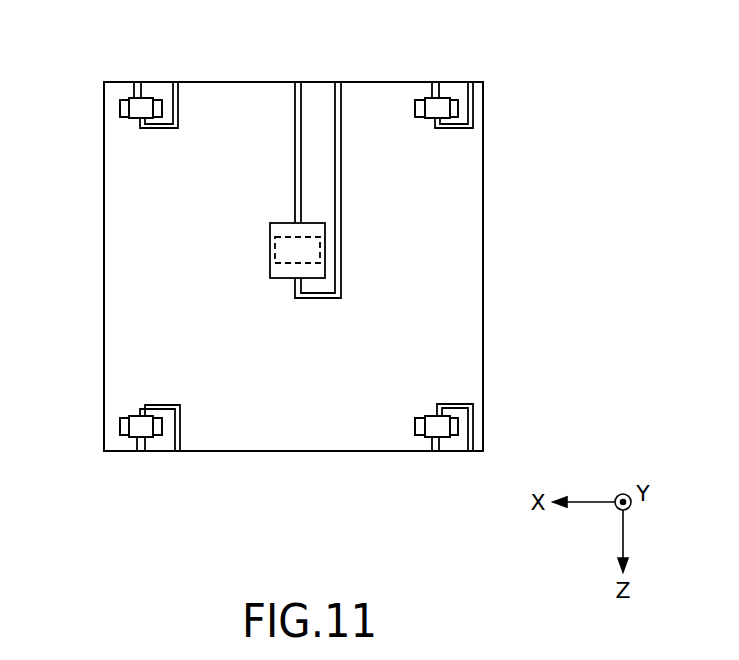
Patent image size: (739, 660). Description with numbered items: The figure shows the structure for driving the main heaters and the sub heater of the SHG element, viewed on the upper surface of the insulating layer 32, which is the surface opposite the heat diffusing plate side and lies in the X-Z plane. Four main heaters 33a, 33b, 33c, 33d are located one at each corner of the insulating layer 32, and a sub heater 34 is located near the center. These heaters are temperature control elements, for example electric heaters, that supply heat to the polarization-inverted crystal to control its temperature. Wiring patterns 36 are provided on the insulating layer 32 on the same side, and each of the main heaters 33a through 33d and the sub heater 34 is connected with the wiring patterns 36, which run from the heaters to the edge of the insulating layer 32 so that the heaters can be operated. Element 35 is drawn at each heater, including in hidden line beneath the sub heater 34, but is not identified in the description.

The insulating layer 32 is at (472, 322).
The main heater 33a is at (130, 97).
The main heater 33b is at (135, 441).
The main heater 33c is at (430, 97).
The main heater 33d is at (431, 440).
The sub heater 34 is at (270, 227).
The electrode 35 is at (120, 108).
The wiring patterns 36 is at (296, 97).